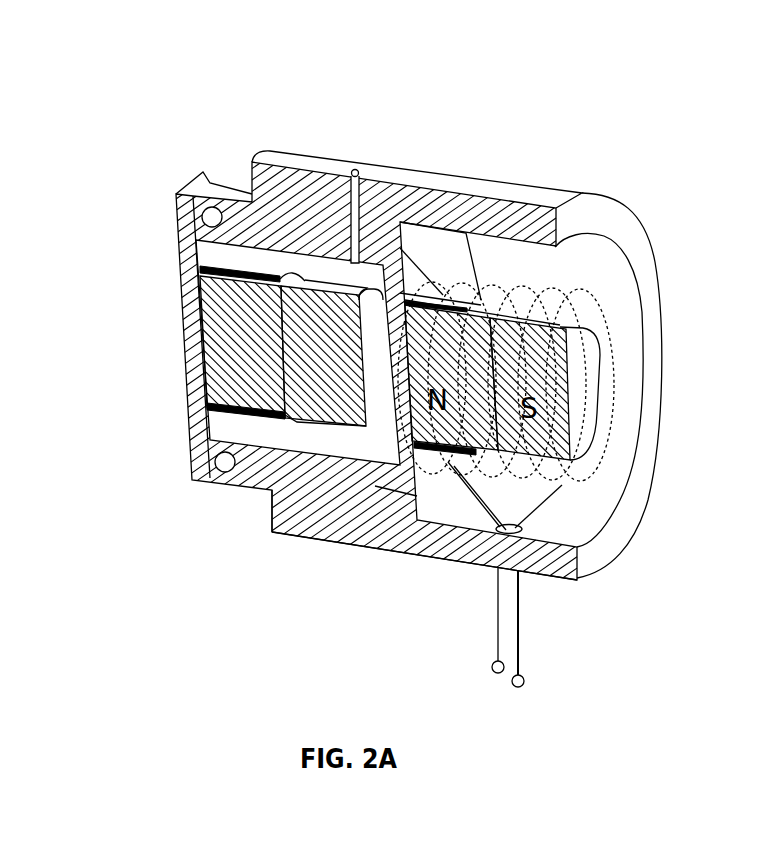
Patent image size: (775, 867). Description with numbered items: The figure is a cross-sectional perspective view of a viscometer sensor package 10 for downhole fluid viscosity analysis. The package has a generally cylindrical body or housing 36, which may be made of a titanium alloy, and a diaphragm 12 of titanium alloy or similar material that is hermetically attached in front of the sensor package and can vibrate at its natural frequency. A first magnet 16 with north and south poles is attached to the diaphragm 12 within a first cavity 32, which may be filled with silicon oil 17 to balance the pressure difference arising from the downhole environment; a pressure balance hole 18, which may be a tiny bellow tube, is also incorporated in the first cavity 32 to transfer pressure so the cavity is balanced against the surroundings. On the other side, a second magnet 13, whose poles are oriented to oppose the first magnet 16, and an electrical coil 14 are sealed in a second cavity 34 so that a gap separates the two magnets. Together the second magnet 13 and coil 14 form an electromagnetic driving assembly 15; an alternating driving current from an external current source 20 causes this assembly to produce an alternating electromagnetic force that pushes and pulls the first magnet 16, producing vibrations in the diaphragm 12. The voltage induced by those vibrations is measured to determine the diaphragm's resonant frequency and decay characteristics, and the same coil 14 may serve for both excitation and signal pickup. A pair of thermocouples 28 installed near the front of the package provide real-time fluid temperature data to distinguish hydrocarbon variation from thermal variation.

The viscometer sensor package 10 is at (131, 88).
The diaphragm 12 is at (183, 350).
The second magnet 13 is at (580, 387).
The electrical coil 14 is at (381, 556).
The electromagnetic driving assembly 15 is at (573, 258).
The first magnet 16 is at (268, 490).
The silicon oil 17 is at (368, 442).
The pressure balance hole 18 is at (357, 169).
The external current source 20 is at (520, 612).
The thermocouples 28 is at (192, 478).
The first cavity 32 is at (306, 420).
The second cavity 34 is at (520, 497).
The housing 36 is at (463, 177).